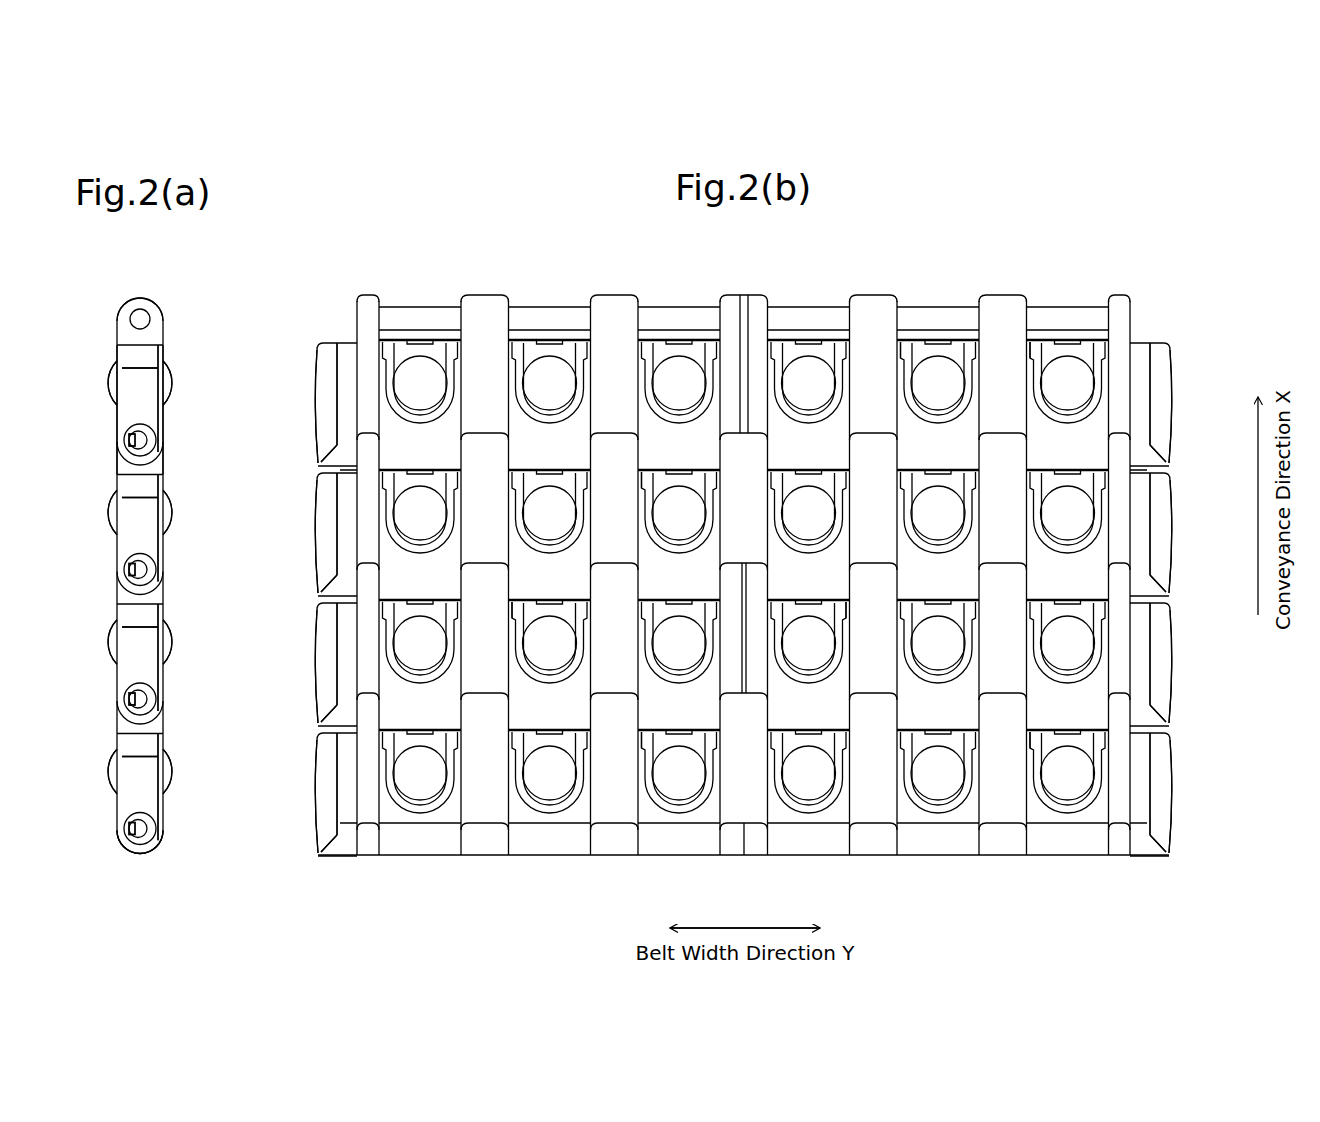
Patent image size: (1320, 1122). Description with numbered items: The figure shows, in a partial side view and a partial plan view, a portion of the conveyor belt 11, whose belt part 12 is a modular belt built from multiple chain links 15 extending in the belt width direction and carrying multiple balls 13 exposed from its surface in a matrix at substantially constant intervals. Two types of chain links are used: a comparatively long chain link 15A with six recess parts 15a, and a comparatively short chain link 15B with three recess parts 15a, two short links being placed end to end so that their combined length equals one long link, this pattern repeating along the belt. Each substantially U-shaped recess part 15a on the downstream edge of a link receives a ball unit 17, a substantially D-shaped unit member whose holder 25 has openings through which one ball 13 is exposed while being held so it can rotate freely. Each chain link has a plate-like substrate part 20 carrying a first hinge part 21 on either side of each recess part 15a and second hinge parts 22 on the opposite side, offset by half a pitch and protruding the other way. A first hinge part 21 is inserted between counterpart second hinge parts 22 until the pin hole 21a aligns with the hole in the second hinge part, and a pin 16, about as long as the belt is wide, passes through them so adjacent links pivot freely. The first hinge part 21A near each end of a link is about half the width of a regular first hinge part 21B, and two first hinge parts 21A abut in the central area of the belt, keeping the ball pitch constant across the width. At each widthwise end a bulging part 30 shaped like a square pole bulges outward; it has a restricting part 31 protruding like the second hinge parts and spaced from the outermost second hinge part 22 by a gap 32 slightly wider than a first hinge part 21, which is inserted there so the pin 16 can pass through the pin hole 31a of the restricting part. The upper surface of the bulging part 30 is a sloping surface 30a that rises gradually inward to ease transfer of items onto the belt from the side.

In FIG. 2A, the conveyor belt 11 is at (122, 290).
In FIG. 2B, the conveyor belt 11 is at (1095, 220).
In FIG. 2B, the belt part 12 is at (873, 825).
In FIG. 2A, the ball 13 is at (160, 368).
In FIG. 2B, the ball 13 is at (428, 372).
In FIG. 2A, the chain link 15 is at (125, 412).
In FIG. 2B, the chain link 15 is at (316, 378).
In FIG. 2B, the chain link 15A is at (759, 652).
In FIG. 2B, the chain link 15B is at (765, 497).
In FIG. 2B, the recess part 15a is at (785, 415).
In FIG. 2A, the pin 16 is at (160, 318).
In FIG. 2B, the pin 16 is at (833, 329).
In FIG. 2B, the ball unit 17 is at (420, 338).
In FIG. 2B, the substrate part 20 is at (735, 875).
In FIG. 2B, the first hinge part 21 is at (370, 298).
In FIG. 2A, the first hinge part 21A is at (148, 303).
In FIG. 2B, the first hinge part 21A is at (1180, 688).
In FIG. 2B, the first hinge part 21B is at (742, 464).
In FIG. 2A, the pin hole 21a is at (130, 319).
In FIG. 2B, the second hinge part 22 is at (985, 578).
In FIG. 2B, the holder 25 is at (903, 342).
In FIG. 2A, the bulging part 30 is at (112, 390).
In FIG. 2B, the bulging part 30 is at (320, 356).
In FIG. 2A, the sloping surface 30a is at (168, 410).
In FIG. 2B, the sloping surface 30a is at (337, 402).
In FIG. 2A, the restricting part 31 is at (122, 441).
In FIG. 2B, the restricting part 31 is at (325, 464).
In FIG. 2A, the pin hole 31a is at (145, 855).
In FIG. 2B, the gap 32 is at (1130, 858).